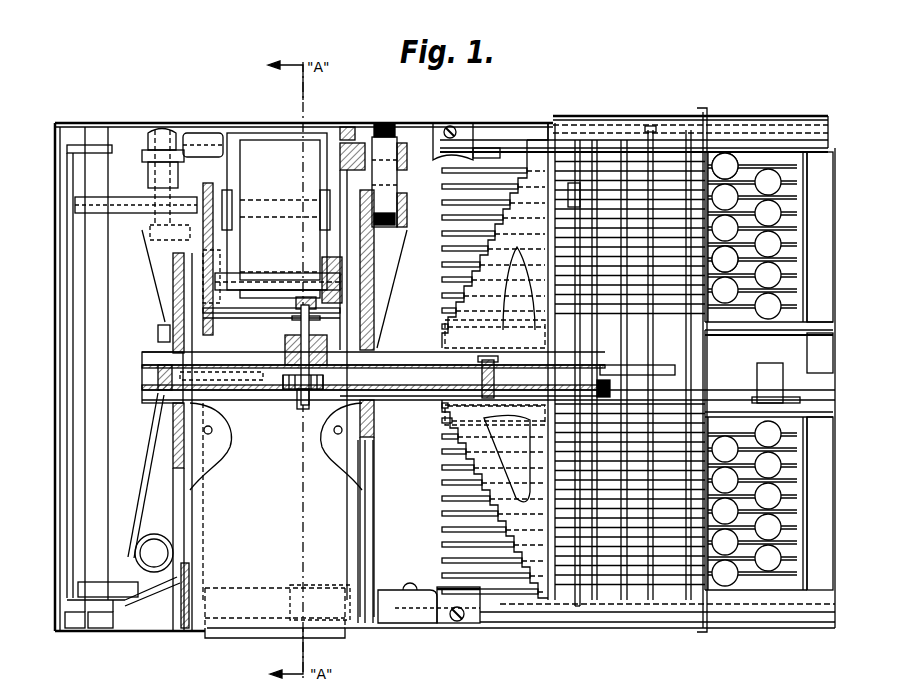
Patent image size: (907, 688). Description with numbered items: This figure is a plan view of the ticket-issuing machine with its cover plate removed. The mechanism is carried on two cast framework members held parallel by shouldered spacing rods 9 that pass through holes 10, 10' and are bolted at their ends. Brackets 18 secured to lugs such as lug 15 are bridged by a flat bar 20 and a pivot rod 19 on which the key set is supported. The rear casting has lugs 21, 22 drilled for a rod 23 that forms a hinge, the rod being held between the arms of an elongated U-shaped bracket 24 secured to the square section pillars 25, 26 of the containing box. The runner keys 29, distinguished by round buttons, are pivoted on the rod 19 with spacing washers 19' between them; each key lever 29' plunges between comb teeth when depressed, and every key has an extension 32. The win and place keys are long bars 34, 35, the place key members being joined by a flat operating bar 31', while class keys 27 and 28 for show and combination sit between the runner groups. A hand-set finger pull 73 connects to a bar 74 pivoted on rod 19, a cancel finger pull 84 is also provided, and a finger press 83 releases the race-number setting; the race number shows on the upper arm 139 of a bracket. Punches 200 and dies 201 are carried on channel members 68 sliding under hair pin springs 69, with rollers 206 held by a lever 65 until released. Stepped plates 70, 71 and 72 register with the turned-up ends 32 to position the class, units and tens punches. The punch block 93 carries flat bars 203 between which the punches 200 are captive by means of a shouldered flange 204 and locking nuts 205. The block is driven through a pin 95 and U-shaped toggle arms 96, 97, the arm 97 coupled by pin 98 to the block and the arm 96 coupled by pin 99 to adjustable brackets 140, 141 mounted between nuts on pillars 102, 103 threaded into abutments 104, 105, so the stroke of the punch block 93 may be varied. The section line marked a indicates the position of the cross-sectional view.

The shouldered spacing rods 9 is at (248, 592).
The hole 10 is at (196, 442).
The hole 10' is at (331, 531).
The lug 15 is at (392, 595).
The brackets 18 is at (660, 120).
The pivot rod 19 is at (587, 351).
The spacing washers 19' is at (563, 633).
The flat bar 20 is at (460, 140).
The lug 21 is at (112, 582).
The lug 22 is at (135, 198).
The rod 23 is at (104, 398).
The U-shaped bracket 24 is at (62, 371).
The square section pillar 25 is at (75, 133).
The square section pillar 26 is at (76, 630).
The class key 27 is at (833, 345).
The class key 28 is at (784, 386).
The runner keys 29 is at (752, 369).
The key lever 29' is at (652, 368).
The flat operating bar 31' is at (655, 384).
The extension 32 is at (442, 232).
The win key 34 is at (825, 161).
The place key 35 is at (828, 433).
The lever 65 is at (445, 392).
The channel members 68 is at (212, 352).
The hair pin springs 69 is at (142, 494).
The stepped plate 70 is at (445, 334).
The stepped plate 71 is at (450, 305).
The stepped plate 72 is at (445, 428).
The finger pull 73 is at (725, 259).
The bar 74 is at (570, 272).
The finger press 83 is at (611, 388).
The finger pull 84 is at (725, 166).
The punch block 93 is at (213, 236).
The pin 95 is at (268, 200).
The toggle arm 96 is at (265, 133).
The toggle arm 97 is at (250, 272).
The pin 98 is at (280, 272).
The pin 99 is at (234, 133).
The pillar 102 is at (162, 128).
The pillar 103 is at (385, 124).
The abutment 104 is at (148, 226).
The abutment 105 is at (400, 208).
The upper arm 139 is at (660, 366).
The adjustable bracket 140 is at (190, 132).
The adjustable bracket 141 is at (347, 126).
The punches 200 is at (292, 336).
The die 201 is at (298, 400).
The flat bars 203 is at (240, 314).
The shouldered flange 204 is at (298, 319).
The locking nuts 205 is at (295, 302).
The rollers 206 is at (498, 373).
The cam a is at (185, 487).